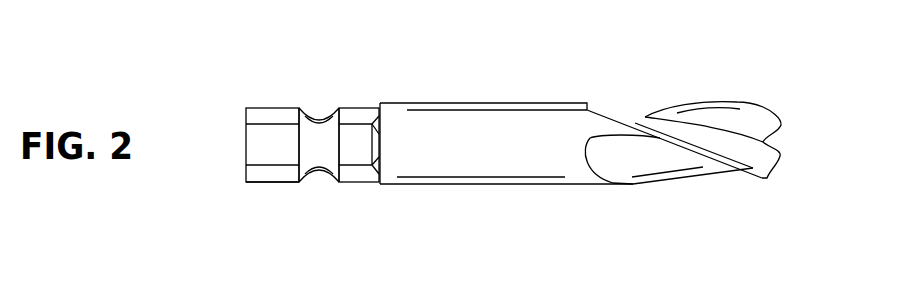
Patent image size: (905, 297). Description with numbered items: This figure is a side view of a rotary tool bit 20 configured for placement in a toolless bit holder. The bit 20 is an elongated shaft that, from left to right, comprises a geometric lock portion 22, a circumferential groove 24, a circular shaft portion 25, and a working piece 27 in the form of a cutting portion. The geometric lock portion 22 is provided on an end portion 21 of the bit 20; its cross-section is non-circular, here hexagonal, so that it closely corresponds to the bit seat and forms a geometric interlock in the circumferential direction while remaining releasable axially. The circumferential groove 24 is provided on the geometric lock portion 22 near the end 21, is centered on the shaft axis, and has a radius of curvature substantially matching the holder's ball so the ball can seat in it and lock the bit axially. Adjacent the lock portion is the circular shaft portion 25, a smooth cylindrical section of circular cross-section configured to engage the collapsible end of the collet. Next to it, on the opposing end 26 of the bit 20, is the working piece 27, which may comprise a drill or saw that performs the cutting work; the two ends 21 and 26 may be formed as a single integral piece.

The rotary tool bit 20 is at (440, 130).
The end portion 21 is at (270, 178).
The geometric lock portion 22 is at (250, 132).
The circumferential groove 24 is at (325, 133).
The circular shaft portion 25 is at (520, 130).
The opposing end 26 is at (760, 120).
The working piece 27 is at (712, 113).